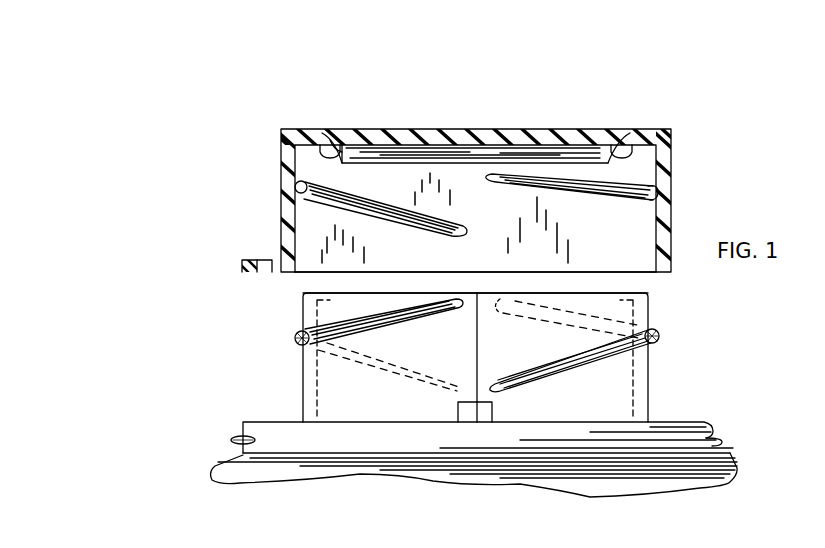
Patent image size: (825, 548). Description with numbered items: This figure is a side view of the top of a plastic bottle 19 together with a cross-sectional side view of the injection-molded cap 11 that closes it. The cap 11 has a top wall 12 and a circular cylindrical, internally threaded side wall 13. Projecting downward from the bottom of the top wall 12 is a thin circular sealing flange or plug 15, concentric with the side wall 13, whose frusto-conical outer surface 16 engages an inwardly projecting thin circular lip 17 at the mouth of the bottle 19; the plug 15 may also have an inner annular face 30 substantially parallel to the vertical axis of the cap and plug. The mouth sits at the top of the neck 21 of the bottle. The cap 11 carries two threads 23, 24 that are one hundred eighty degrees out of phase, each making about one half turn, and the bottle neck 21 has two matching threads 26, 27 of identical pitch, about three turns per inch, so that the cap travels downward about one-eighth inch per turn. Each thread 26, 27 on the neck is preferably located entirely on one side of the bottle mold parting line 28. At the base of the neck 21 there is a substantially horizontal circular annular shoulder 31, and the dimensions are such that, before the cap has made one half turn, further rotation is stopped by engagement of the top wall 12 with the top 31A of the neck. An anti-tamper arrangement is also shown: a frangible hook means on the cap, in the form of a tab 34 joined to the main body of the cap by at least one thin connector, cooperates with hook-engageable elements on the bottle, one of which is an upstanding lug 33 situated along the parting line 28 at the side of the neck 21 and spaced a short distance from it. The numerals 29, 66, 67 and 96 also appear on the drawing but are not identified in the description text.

The cap 11 is at (703, 153).
The top wall 12 is at (357, 136).
The side wall 13 is at (281, 153).
The sealing flange or plug 15 is at (350, 150).
The frusto-conical outer surface 16 is at (322, 143).
The lip 17 is at (636, 292).
The bottle 19 is at (737, 443).
The neck 21 is at (218, 345).
The thread 23 is at (296, 185).
The thread 24 is at (660, 186).
The thread 26 is at (300, 343).
The thread 27 is at (652, 358).
The bottle mold parting line 28 is at (476, 343).
The alternate prong position 29 is at (487, 284).
The inner annular face 30 is at (340, 141).
The shoulder 31 is at (274, 422).
The top of the neck 31A is at (305, 292).
The lug 33 is at (477, 412).
The tab 34 is at (257, 260).
The prong head 66 is at (296, 332).
The prong head 67 is at (648, 328).
The flange bead 96 is at (230, 439).